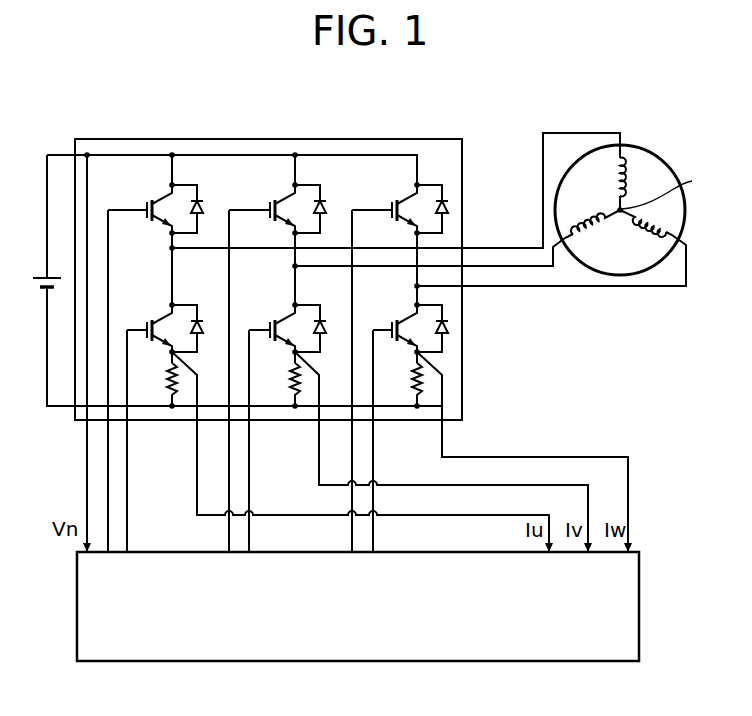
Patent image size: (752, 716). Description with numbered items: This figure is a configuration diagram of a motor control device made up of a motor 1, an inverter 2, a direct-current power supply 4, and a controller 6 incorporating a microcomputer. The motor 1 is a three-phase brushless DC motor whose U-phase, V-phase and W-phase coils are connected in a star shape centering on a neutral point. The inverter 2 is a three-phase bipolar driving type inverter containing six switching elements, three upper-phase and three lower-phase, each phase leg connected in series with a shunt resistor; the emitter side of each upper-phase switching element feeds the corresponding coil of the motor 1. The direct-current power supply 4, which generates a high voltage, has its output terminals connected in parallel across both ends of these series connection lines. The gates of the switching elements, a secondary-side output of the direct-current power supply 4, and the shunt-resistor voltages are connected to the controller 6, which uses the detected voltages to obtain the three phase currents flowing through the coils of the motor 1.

The motor 1 is at (647, 151).
The inverter 2 is at (156, 139).
The direct-current power supply 4 is at (47, 270).
The controller 6 is at (641, 573).